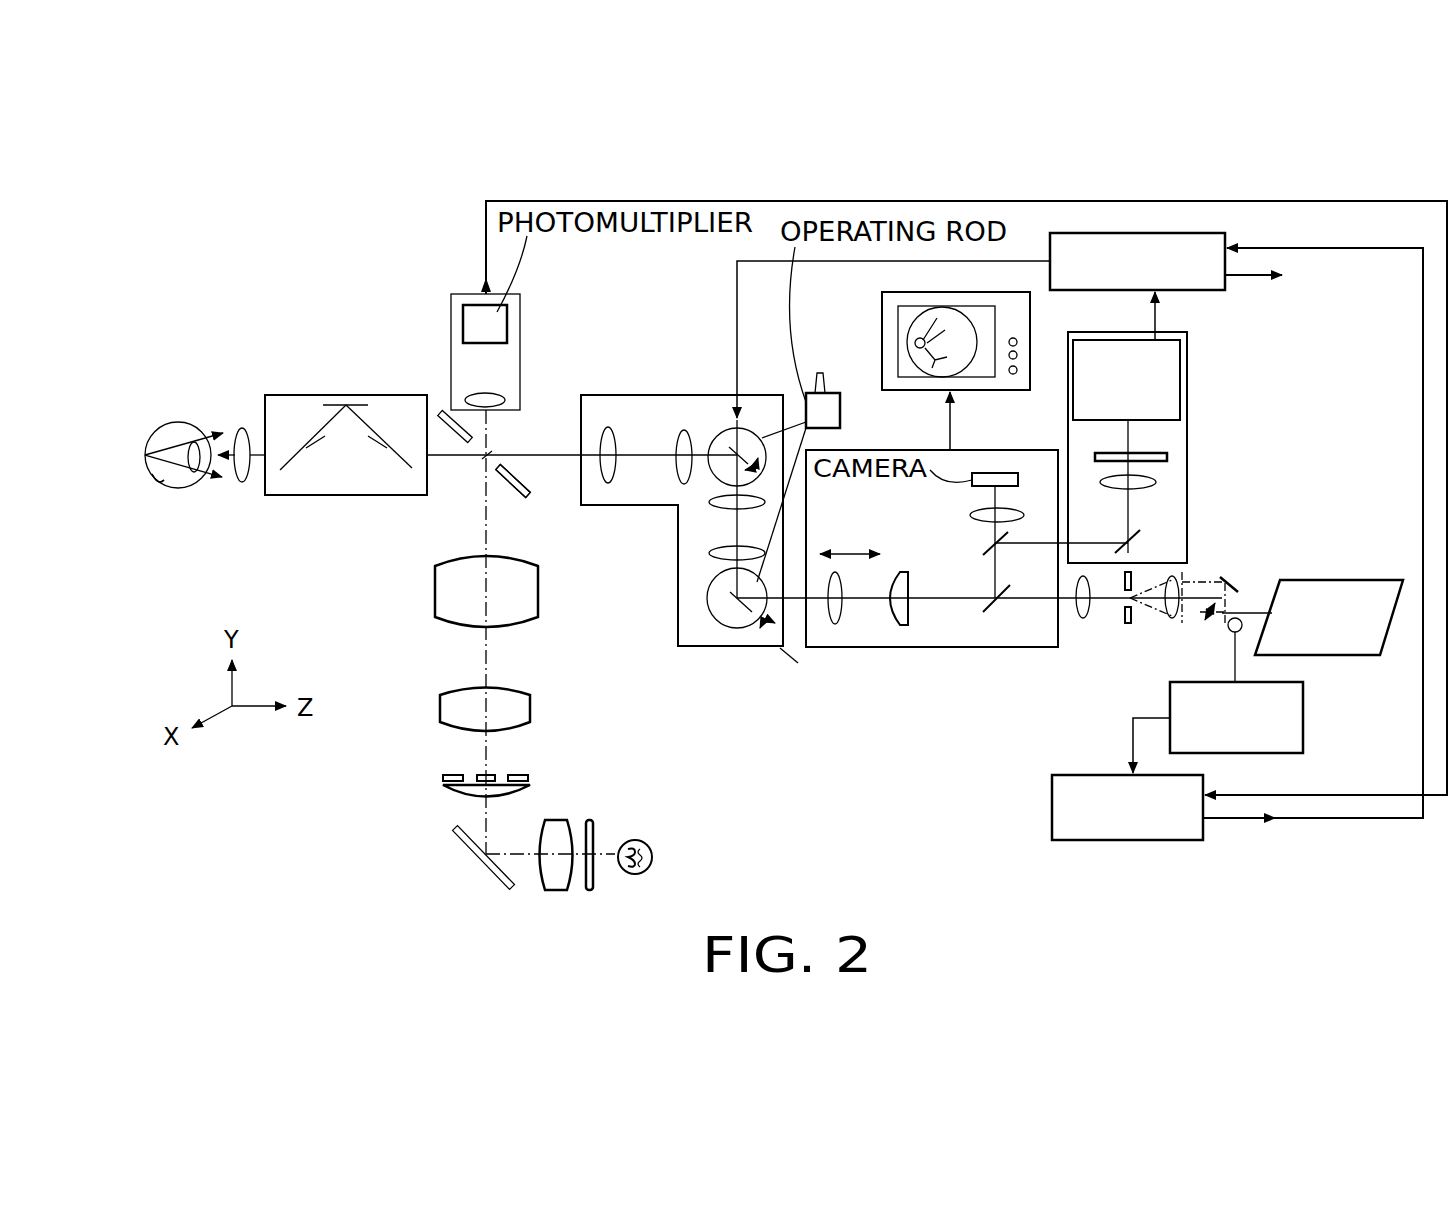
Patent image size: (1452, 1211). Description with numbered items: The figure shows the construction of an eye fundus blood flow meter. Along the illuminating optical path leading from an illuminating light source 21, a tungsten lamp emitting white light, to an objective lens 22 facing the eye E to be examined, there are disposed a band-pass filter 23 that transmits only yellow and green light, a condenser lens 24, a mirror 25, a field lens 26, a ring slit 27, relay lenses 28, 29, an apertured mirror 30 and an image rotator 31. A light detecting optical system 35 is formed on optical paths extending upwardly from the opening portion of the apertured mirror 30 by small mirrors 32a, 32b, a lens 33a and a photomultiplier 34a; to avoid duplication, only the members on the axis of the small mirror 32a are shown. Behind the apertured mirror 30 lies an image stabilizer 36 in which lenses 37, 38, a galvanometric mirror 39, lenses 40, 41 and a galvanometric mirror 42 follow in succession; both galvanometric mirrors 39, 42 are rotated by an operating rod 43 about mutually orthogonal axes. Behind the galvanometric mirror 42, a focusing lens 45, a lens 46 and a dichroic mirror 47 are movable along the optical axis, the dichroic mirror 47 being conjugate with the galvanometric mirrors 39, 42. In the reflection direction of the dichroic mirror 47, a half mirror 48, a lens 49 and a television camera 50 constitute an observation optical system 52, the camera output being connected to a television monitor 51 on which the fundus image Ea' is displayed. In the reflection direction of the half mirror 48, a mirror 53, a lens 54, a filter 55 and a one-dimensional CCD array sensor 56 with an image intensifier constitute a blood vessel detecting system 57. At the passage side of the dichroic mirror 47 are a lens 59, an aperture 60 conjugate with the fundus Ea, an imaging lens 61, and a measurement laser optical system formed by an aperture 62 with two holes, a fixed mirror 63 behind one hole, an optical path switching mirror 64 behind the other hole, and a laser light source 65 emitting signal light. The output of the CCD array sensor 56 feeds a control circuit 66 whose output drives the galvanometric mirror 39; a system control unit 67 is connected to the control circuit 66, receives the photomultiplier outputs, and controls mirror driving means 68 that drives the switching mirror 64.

The illuminating light source 21 is at (653, 855).
The objective lens 22 is at (242, 483).
The band-pass filter 23 is at (593, 830).
The condenser lens 24 is at (555, 820).
The mirror 25 is at (455, 832).
The field lens 26 is at (443, 796).
The ring slit 27 is at (443, 778).
The relay lens 28 is at (440, 708).
The relay lens 29 is at (440, 592).
The apertured mirror 30 is at (440, 413).
The image rotator 31 is at (311, 395).
The small mirror 32a is at (488, 452).
The small mirror 32b is at (513, 480).
The lens 33a is at (500, 403).
The photomultiplier 34a is at (470, 325).
The light detecting optical system 35 is at (463, 294).
The image stabilizer 36 is at (660, 395).
The lens 37 is at (605, 485).
The lens 38 is at (688, 430).
The galvanometric mirror 39 is at (752, 430).
The lens 40 is at (710, 503).
The lens 41 is at (710, 553).
The galvanometric mirror 42 is at (740, 625).
The operating rod 43 is at (840, 418).
The focusing lens 45 is at (835, 625).
The lens 46 is at (898, 625).
The dichroic mirror 47 is at (990, 615).
The half mirror 48 is at (983, 552).
The lens 49 is at (972, 515).
The television camera 50 is at (1005, 473).
The television monitor 51 is at (882, 330).
The observation optical system 52 is at (1035, 647).
The mirror 53 is at (1140, 535).
The lens 54 is at (1155, 483).
The filter 55 is at (1167, 457).
The one-dimensional CCD array sensor 56 is at (1180, 380).
The blood vessel detecting system 57 is at (1187, 428).
The lens 59 is at (1083, 618).
The aperture 60 is at (1128, 625).
The imaging lens 61 is at (1172, 618).
The aperture with two holes 62 is at (1183, 575).
The fixed mirror 63 is at (1238, 580).
The optical path switching mirror 64 is at (1230, 628).
The laser light source 65 is at (1345, 580).
The control circuit 66 is at (1193, 290).
The system control unit 67 is at (1052, 797).
The mirror driving means 68 is at (1303, 718).
The eye to be examined E is at (177, 422).
The fundus Ea is at (168, 506).
The fundus image Ea' is at (998, 338).